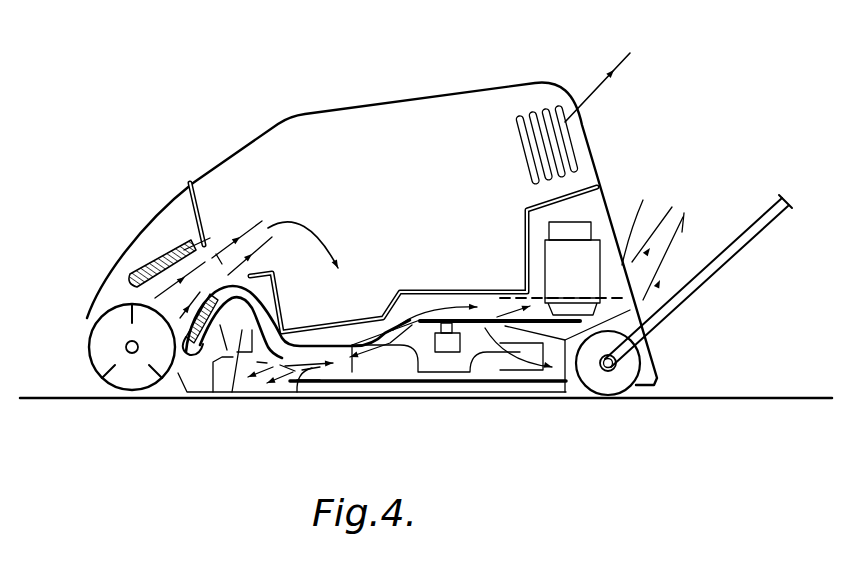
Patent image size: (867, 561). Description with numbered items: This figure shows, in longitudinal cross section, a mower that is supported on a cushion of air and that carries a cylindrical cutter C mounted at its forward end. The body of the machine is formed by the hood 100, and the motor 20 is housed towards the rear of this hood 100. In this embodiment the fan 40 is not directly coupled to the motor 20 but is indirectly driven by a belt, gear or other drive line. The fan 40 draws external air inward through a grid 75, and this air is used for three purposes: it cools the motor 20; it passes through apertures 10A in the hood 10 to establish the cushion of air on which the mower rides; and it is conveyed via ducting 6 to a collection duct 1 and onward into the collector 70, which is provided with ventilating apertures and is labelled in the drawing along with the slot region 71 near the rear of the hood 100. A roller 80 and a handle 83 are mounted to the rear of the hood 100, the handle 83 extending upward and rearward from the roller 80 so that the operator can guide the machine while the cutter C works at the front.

The hood 100 is at (480, 84).
The collection duct 1 is at (192, 247).
The collector 70 is at (411, 197).
The exhaust slots 71 is at (572, 143).
The motor 20 is at (570, 255).
The grid 75 is at (600, 213).
The handle 83 is at (740, 245).
The roller 80 is at (612, 383).
The fan 40 is at (392, 352).
The apertures 10A is at (262, 362).
The ducting 6 is at (233, 392).
The hood 10 is at (198, 393).
The cylindrical cutter C is at (103, 342).